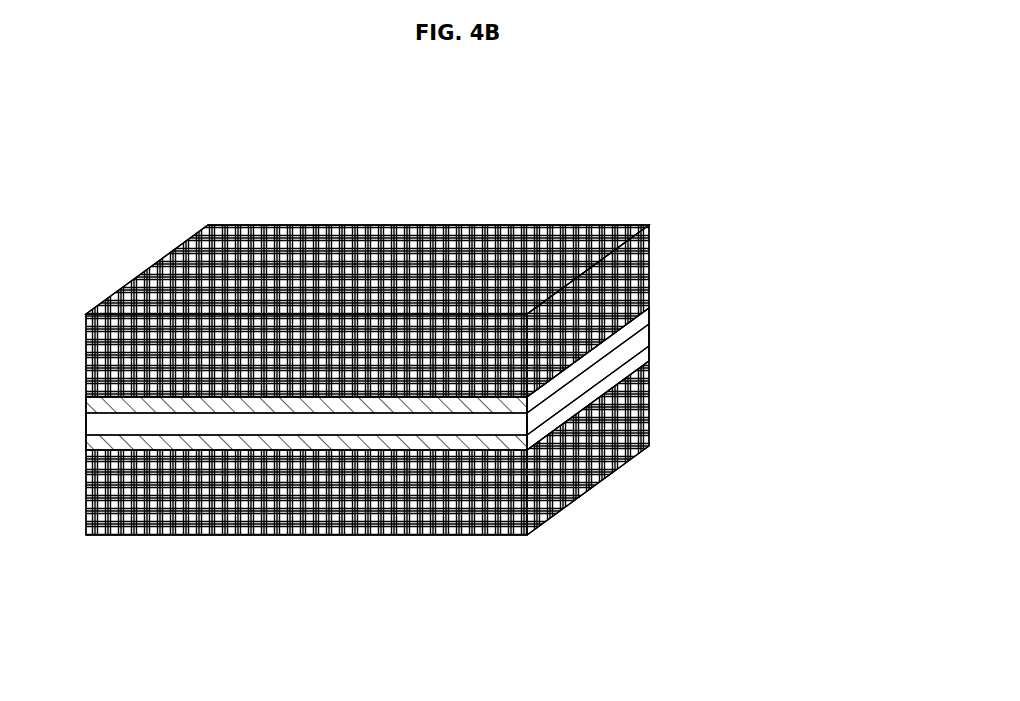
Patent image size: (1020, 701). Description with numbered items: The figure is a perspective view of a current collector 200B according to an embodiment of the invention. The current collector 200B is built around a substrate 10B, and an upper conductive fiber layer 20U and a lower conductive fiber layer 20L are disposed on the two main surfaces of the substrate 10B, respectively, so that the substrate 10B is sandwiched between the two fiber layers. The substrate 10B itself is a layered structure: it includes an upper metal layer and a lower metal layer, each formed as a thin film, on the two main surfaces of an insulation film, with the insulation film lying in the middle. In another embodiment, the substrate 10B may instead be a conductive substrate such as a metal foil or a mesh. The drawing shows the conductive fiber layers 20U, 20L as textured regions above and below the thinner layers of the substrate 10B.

The current collector 200B is at (460, 195).
The upper conductive fiber layer 20U is at (649, 267).
The lower conductive fiber layer 20L is at (649, 413).
The substrate 10B is at (767, 327).